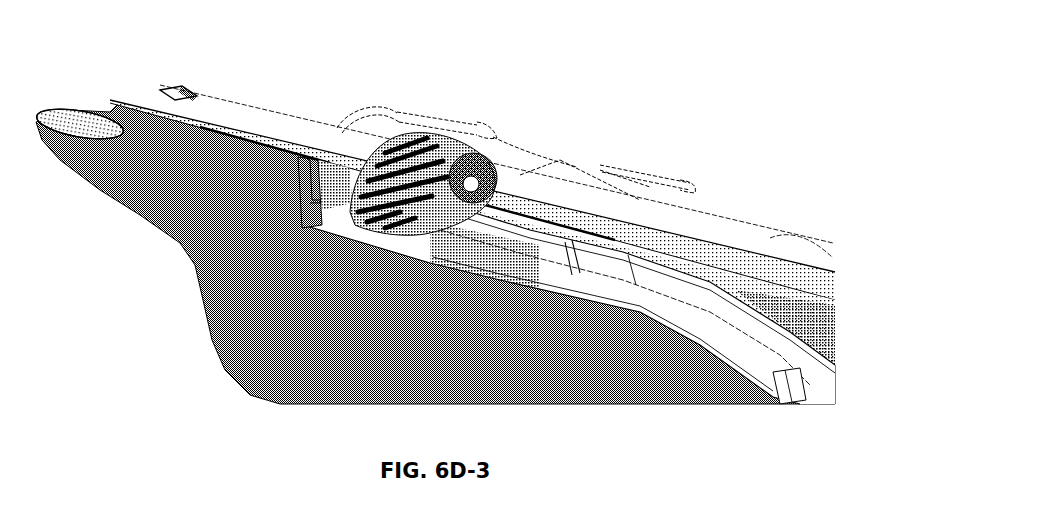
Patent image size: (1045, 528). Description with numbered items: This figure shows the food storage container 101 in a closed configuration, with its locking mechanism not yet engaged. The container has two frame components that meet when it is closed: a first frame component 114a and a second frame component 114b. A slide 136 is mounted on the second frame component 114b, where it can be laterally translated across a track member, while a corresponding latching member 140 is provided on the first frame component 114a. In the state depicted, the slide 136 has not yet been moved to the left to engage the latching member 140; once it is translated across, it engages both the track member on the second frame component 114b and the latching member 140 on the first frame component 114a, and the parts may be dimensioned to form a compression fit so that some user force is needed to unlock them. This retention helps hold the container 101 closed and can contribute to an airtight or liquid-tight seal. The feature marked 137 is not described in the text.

The food storage container 101 is at (434, 230).
The first frame component 114a is at (699, 271).
The second frame component 114b is at (670, 302).
The slide 136 is at (500, 160).
The clip opening 137 is at (478, 186).
The latching member 140 is at (333, 158).